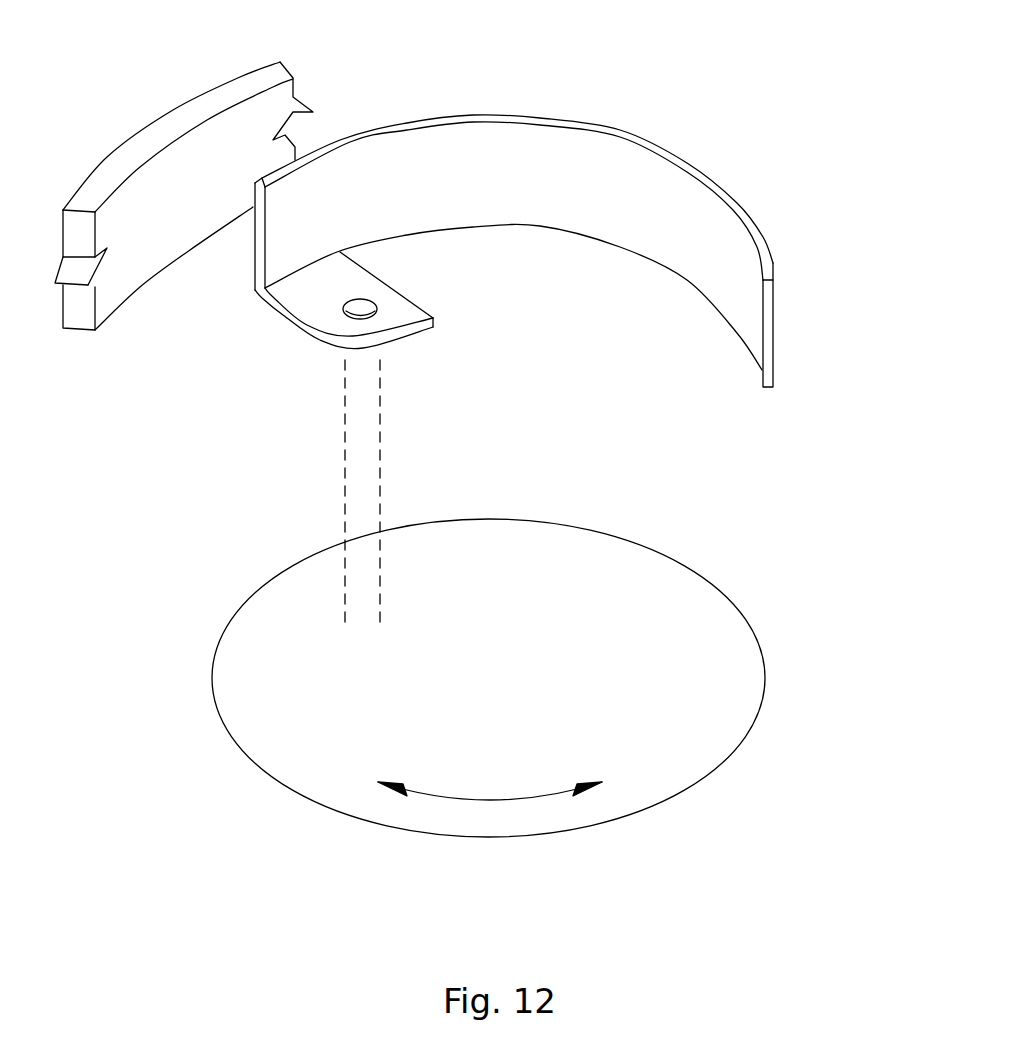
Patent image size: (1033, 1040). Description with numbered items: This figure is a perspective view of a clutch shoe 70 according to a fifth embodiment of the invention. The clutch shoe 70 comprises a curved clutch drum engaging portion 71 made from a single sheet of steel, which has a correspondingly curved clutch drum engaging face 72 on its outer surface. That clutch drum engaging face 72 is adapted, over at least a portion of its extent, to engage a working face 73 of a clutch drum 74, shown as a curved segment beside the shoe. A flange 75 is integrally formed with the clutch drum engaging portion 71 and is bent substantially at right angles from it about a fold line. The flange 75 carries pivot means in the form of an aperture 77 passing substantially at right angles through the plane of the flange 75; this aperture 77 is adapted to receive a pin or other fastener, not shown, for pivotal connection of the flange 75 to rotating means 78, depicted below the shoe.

The clutch shoe 70 is at (767, 152).
The clutch drum engaging portion 71 is at (615, 222).
The clutch drum engaging face 72 is at (657, 147).
The working face 73 is at (165, 213).
The clutch drum 74 is at (127, 135).
The flange 75 is at (325, 308).
The aperture 77 is at (377, 310).
The rotating means 78 is at (587, 593).